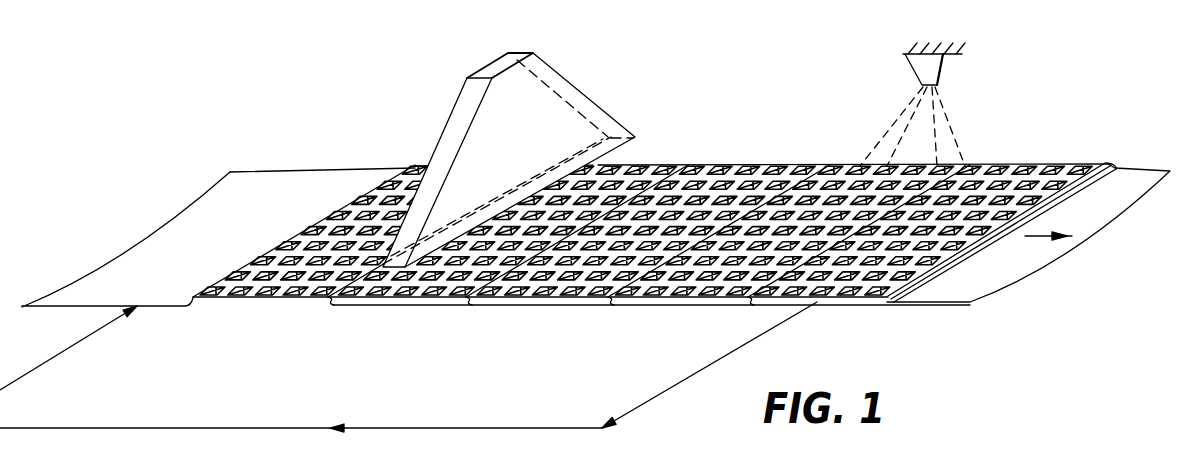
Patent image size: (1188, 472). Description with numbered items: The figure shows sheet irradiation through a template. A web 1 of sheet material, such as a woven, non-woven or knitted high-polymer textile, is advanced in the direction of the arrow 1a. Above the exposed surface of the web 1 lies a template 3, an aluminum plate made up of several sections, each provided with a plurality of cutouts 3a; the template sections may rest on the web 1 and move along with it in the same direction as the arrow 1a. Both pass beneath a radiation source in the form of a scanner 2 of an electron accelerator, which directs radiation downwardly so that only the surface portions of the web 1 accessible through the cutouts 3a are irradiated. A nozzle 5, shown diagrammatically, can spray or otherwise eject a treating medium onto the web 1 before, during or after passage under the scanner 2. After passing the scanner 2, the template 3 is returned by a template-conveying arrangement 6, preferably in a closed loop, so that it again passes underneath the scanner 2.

The web of sheet material 1 is at (997, 278).
The arrow 1a is at (1050, 234).
The scanner of an electron accelerator 2 is at (560, 75).
The template 3 is at (850, 298).
The cutouts 3a is at (838, 168).
The nozzle 5 is at (940, 69).
The template-conveying arrangement 6 is at (253, 428).